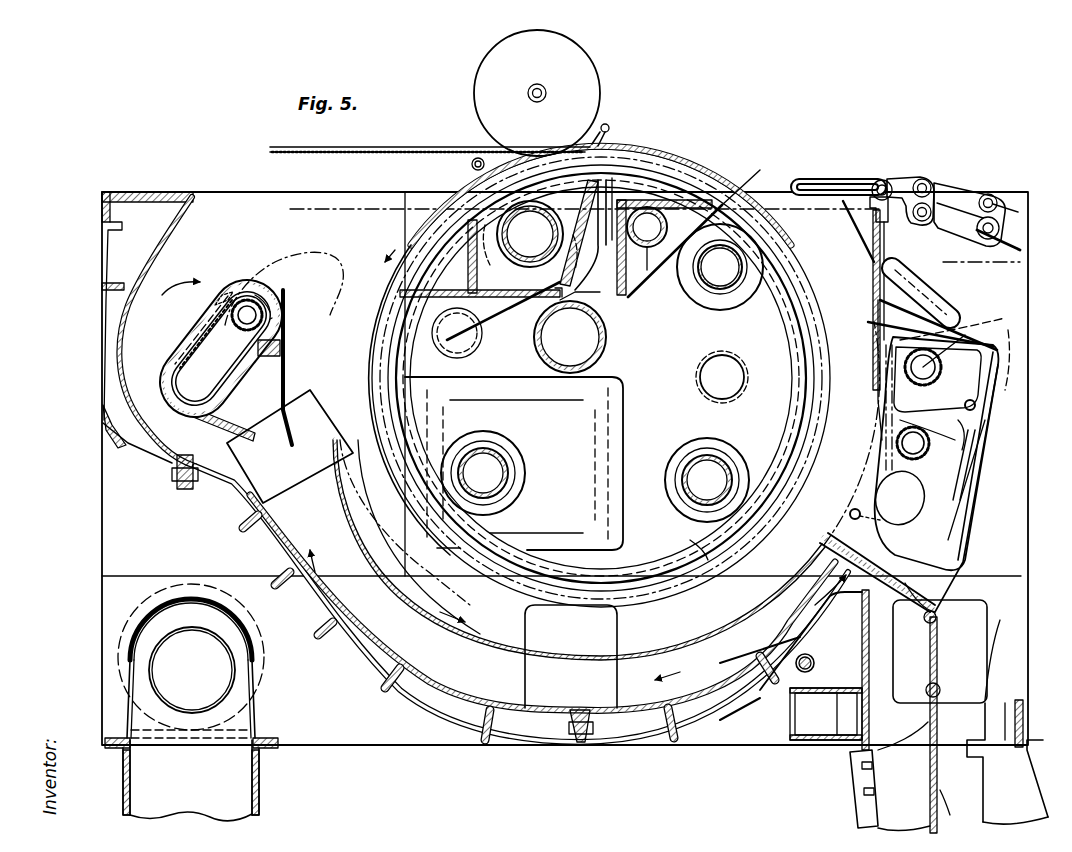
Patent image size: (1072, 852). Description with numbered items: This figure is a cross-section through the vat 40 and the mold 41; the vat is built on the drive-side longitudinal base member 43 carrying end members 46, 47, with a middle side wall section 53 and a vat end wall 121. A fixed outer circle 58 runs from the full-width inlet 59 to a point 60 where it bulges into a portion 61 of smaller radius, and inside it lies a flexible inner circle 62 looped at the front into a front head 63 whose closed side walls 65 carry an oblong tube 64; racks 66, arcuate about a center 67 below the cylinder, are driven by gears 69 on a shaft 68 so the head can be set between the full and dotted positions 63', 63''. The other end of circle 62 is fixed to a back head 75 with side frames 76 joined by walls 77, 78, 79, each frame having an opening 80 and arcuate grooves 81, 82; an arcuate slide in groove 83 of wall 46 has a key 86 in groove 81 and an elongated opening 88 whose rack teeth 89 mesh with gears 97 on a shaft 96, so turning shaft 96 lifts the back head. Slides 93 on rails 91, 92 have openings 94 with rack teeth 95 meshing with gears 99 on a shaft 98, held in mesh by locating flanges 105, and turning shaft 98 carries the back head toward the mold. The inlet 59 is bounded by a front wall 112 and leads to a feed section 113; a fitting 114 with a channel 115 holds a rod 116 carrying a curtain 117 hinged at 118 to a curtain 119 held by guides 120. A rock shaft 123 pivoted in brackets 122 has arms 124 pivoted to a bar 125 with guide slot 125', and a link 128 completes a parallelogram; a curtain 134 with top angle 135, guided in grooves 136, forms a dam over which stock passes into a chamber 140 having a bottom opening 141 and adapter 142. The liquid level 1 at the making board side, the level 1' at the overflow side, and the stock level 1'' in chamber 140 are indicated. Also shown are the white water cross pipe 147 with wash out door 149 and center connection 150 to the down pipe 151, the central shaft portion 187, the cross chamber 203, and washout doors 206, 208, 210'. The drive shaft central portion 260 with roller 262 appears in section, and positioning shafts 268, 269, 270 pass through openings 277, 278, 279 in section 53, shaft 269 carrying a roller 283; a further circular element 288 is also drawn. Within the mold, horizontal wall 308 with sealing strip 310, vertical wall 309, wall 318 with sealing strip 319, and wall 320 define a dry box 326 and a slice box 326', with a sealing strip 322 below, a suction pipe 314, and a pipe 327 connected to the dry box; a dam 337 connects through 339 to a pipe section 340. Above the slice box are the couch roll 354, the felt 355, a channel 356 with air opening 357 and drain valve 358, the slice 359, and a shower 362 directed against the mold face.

The vat 40 is at (100, 256).
The mold 41 is at (710, 170).
The longitudinal base member 43 is at (352, 745).
The end side wall member 46 is at (992, 484).
The end side wall member 47 is at (101, 464).
The middle side wall section 53 is at (402, 203).
The fixed outer circle 58 is at (432, 697).
The inlet 59 is at (930, 656).
The point 60 is at (236, 490).
The portion of smaller radius 61 is at (115, 318).
The inner vat circle 62 is at (490, 655).
The front head 63 is at (253, 367).
The casing inlet 63' is at (206, 259).
The casing cover 63'' is at (279, 270).
The tubular member 64 is at (228, 378).
The closed side walls 65 is at (232, 428).
The racks 66 is at (206, 336).
The center 67 is at (612, 643).
The shaft 68 is at (258, 296).
The gears 69 is at (263, 317).
The back head 75 is at (1000, 504).
The side frame 76 is at (950, 555).
The wall 77 is at (890, 560).
The wall 78 is at (962, 530).
The wall 79 is at (942, 300).
The opening 80 is at (955, 505).
The groove 81 is at (1008, 312).
The groove 82 is at (866, 516).
The arcuate groove 83 is at (990, 194).
The arcuate key 86 is at (960, 308).
The elongated opening 88 is at (976, 470).
The rack teeth 89 is at (886, 466).
The rail 91 is at (905, 438).
The rail 92 is at (960, 485).
The slide 93 is at (945, 372).
The opening 94 is at (970, 432).
The rack teeth 95 is at (976, 404).
The shaft 96 is at (970, 445).
The gears 97 is at (910, 455).
The shaft 98 is at (958, 326).
The gears 99 is at (932, 382).
The locating flanges 105 is at (895, 392).
The front wall 112 is at (870, 714).
The feed section 113 is at (860, 780).
The fitting 114 is at (938, 586).
The cylindrical channel 115 is at (924, 620).
The cylindrical rod 116 is at (937, 616).
The curtain 117 is at (938, 660).
The hinge connection 118 is at (940, 688).
The curtain 119 is at (926, 781).
The guides 120 is at (866, 805).
The vat end wall 121 is at (1024, 352).
The brackets 122 is at (1010, 232).
The rock shaft 123 is at (1028, 192).
The arms 124 is at (978, 234).
The bar 125 is at (905, 188).
The guide slot 125' is at (839, 171).
The link 128 is at (945, 186).
The curtain 134 is at (870, 240).
The top angle 135 is at (852, 210).
The groove 136 is at (870, 380).
The chamber 140 is at (1012, 330).
The bottom opening 141 is at (997, 733).
The adapter 142 is at (1028, 775).
The white water cross pipe 147 is at (248, 628).
The wash out door 149 is at (226, 686).
The center connection 150 is at (128, 684).
The white water down pipe 151 is at (262, 765).
The central shaft portion 187 is at (814, 663).
The cross chamber 203 is at (805, 728).
The washout door 206 is at (316, 462).
The washout door 208 is at (1000, 625).
The washout door 210' is at (535, 542).
The central portion of drive shaft 260 is at (460, 245).
The roller 262 is at (578, 233).
The positioning shaft 268 is at (690, 290).
The positioning shaft 269 is at (716, 455).
The positioning shaft 270 is at (508, 482).
The opening 277 is at (700, 298).
The opening 278 is at (672, 455).
The opening 279 is at (524, 458).
The roller 283 is at (686, 484).
The roller 288 is at (712, 385).
The horizontal wall 308 is at (696, 152).
The vertical wall 309 is at (578, 262).
The sealing strip 310 is at (702, 178).
The pipe 314 is at (630, 284).
The wall 318 is at (570, 280).
The sealing strip 319 is at (612, 175).
The vertical wall 320 is at (470, 292).
The sealing strip 322 is at (400, 283).
The dry box 326 is at (703, 135).
The slice box 326' is at (475, 157).
The pipe 327 is at (603, 350).
The dam 337 is at (492, 330).
The connection 339 is at (500, 340).
The pipe section 340 is at (446, 350).
The couch roll 354 is at (599, 84).
The felt 355 is at (404, 147).
The channel 356 is at (598, 146).
The opening 357 is at (572, 232).
The valve 358 is at (565, 246).
The slice 359 is at (606, 124).
The shower 362 is at (480, 158).
The liquid level 1 is at (585, 189).
The liquid level 1' is at (777, 183).
The stock level 1'' is at (998, 247).